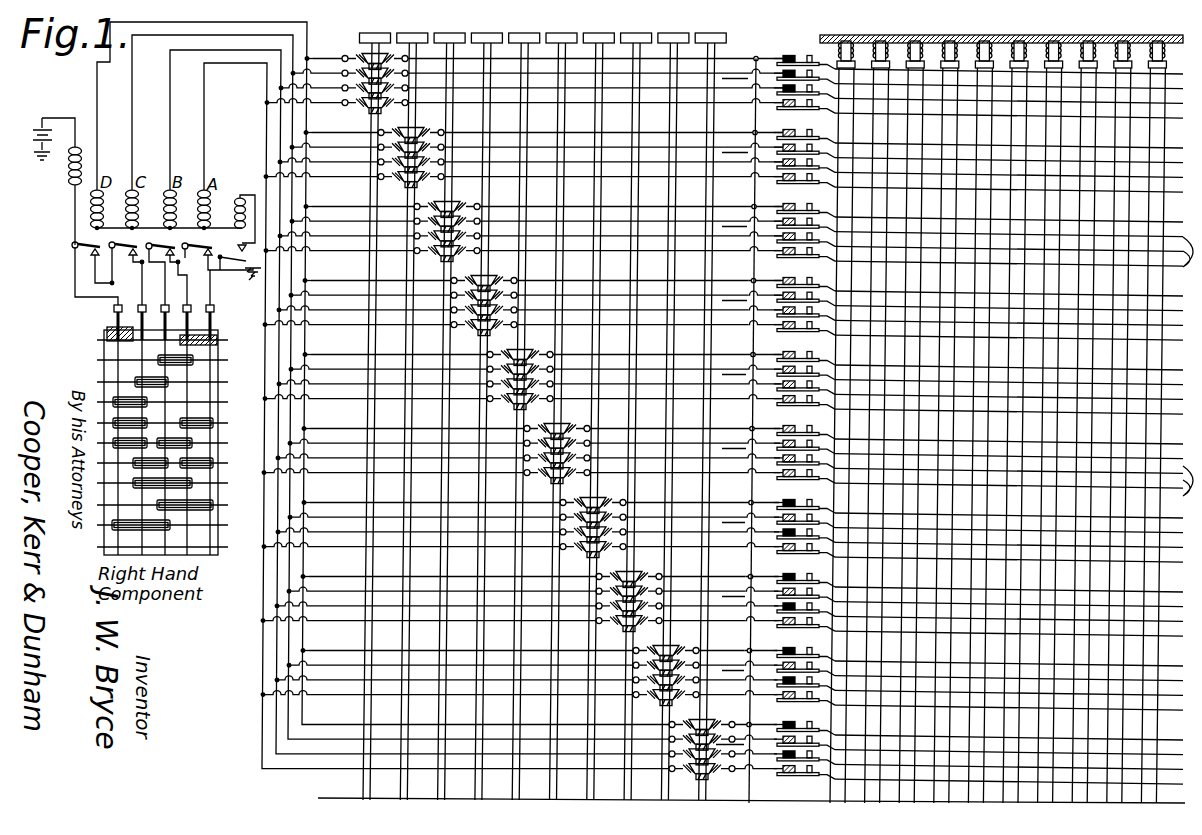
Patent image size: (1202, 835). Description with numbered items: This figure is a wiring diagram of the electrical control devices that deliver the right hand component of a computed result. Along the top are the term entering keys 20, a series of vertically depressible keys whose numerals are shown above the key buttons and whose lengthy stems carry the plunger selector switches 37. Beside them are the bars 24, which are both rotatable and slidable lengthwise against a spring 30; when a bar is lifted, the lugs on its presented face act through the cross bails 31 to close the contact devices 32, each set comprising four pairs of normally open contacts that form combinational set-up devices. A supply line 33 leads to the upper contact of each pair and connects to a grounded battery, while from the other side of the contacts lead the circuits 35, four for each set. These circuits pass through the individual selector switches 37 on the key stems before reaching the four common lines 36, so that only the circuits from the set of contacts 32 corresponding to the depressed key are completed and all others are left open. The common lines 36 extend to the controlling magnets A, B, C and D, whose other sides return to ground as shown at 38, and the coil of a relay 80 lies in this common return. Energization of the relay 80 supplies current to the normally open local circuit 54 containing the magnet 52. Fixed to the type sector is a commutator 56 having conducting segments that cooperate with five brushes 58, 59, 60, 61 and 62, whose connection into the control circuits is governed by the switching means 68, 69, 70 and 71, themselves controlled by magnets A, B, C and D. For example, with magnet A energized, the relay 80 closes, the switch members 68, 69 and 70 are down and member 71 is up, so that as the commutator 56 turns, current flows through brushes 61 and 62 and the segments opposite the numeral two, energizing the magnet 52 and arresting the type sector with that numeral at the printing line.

The term entering keys 20 is at (723, 44).
The bars 24 is at (845, 358).
The spring 30 is at (1163, 52).
The bails 31 is at (1180, 262).
The contact devices 32 is at (808, 62).
The supply line 33 is at (752, 346).
The circuits 35 is at (617, 60).
The common lines 36 is at (303, 556).
The plunger selector switches 37 is at (365, 112).
The ground connection 38 is at (258, 263).
The magnet 52 is at (68, 175).
The local circuit 54 is at (72, 230).
The commutator 56 is at (104, 376).
The brush 58 is at (108, 337).
The brush 59 is at (125, 331).
The brush 60 is at (170, 318).
The brush 61 is at (192, 322).
The brush 62 is at (212, 332).
The switching means 68 is at (82, 248).
The switching means 69 is at (118, 249).
The switching means 70 is at (160, 247).
The switching means 71 is at (200, 247).
The relay 80 is at (237, 200).